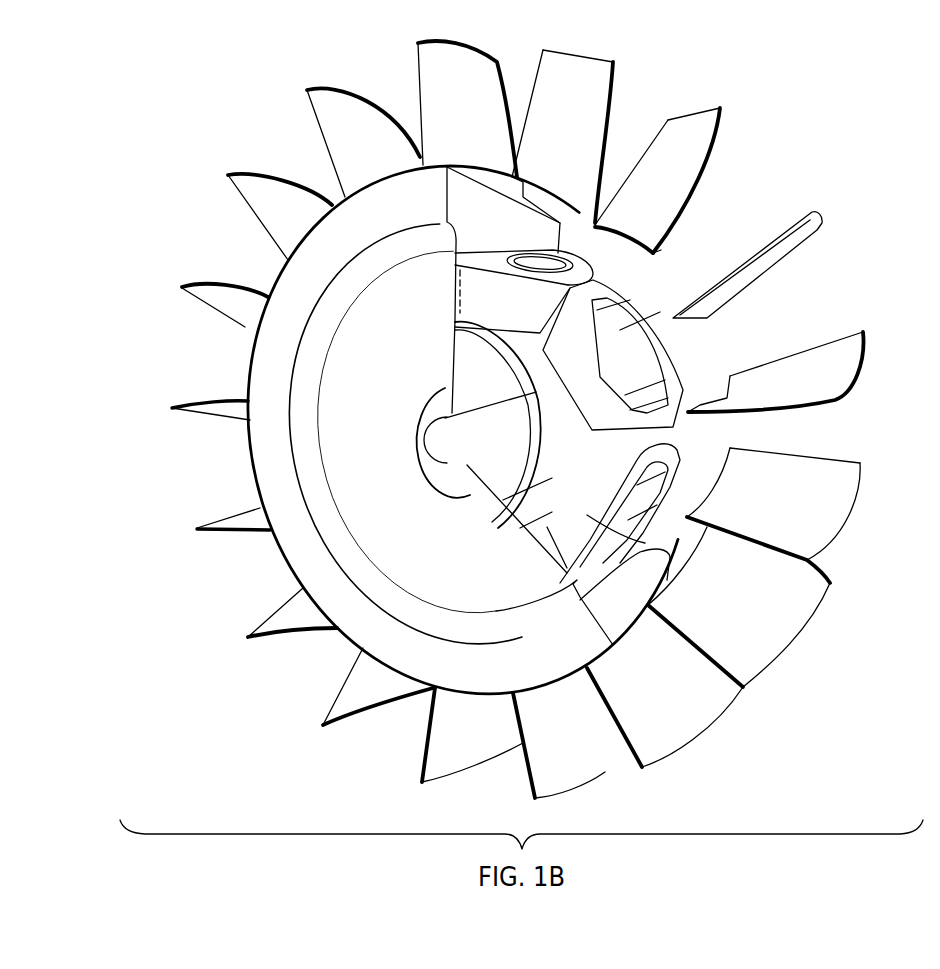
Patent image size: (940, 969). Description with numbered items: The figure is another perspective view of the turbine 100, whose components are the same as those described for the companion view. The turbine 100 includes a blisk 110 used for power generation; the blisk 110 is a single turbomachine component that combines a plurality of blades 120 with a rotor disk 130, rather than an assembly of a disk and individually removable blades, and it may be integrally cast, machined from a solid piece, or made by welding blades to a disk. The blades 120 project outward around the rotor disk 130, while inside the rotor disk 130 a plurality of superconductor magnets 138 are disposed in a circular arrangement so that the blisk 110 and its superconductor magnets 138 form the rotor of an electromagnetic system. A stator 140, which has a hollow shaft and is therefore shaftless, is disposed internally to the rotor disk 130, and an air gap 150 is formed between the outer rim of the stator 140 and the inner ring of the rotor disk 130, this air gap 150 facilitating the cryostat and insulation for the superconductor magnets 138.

The turbine 100 is at (834, 126).
The blisk 110 is at (547, 622).
The blades 120 is at (770, 241).
The rotor disk 130 is at (468, 638).
The superconductor magnets 138 is at (588, 515).
The stator 140 is at (457, 440).
The air gap 150 is at (557, 402).